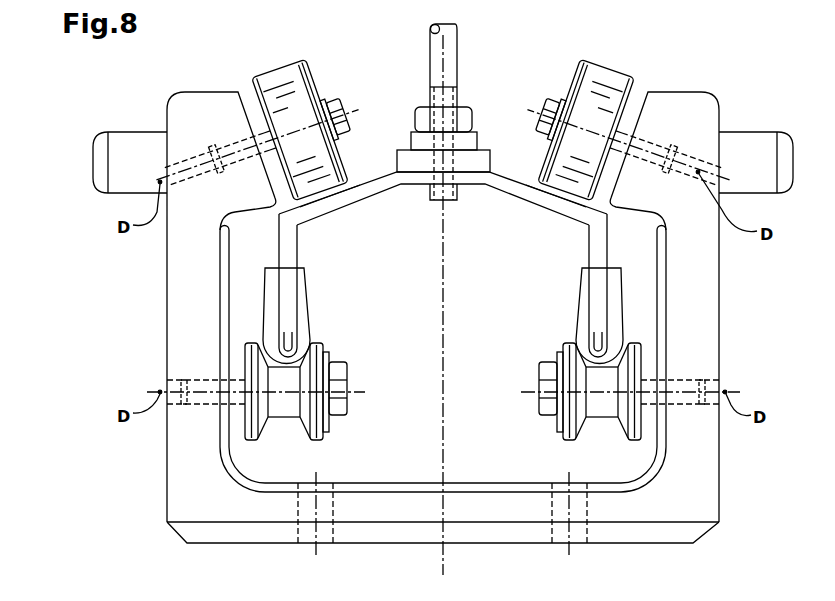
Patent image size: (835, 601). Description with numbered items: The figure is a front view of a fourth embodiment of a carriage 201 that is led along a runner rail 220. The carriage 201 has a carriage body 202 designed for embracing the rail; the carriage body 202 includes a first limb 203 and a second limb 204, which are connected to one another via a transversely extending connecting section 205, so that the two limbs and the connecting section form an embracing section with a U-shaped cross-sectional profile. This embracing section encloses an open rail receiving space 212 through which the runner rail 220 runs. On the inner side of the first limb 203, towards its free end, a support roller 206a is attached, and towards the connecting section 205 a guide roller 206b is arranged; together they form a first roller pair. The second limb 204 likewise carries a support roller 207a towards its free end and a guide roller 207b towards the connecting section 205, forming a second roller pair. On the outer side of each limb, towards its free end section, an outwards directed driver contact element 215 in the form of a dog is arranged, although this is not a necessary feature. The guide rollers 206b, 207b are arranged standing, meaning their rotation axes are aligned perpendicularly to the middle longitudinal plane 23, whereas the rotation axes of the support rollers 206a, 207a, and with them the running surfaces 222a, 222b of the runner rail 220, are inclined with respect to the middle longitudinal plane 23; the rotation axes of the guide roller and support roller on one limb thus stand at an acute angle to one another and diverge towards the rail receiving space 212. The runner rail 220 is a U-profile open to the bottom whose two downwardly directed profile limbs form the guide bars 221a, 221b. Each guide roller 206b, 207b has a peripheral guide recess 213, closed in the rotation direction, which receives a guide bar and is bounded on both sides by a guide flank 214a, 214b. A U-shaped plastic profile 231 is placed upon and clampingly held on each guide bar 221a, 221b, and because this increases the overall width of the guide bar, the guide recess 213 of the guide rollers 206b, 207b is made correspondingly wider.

The carriage 201 is at (405, 299).
The carriage body 202 is at (193, 505).
The first limb 203 is at (177, 290).
The second limb 204 is at (694, 282).
The connecting section 205 is at (475, 507).
The support roller 206a is at (293, 78).
The guide roller 206b is at (242, 403).
The support roller 207a is at (587, 82).
The guide roller 207b is at (567, 368).
The rail receiving space 212 is at (431, 422).
The guide recess 213 is at (282, 428).
The guide flank 214a is at (257, 417).
The guide flank 214b is at (312, 430).
The driver contact element 215 is at (125, 146).
The runner rail 220 is at (443, 216).
The guide bar 221a is at (287, 266).
The guide bar 221b is at (603, 266).
The running surface 222a is at (359, 182).
The running surface 222b is at (532, 182).
The middle longitudinal plane 23 is at (443, 506).
The plastic profile 231 is at (307, 325).